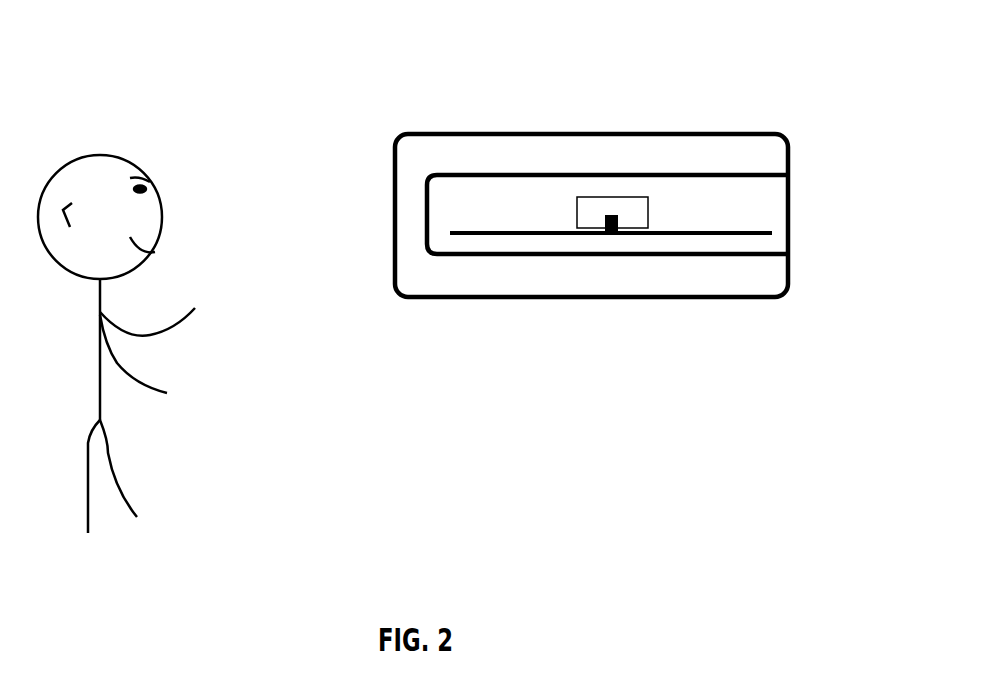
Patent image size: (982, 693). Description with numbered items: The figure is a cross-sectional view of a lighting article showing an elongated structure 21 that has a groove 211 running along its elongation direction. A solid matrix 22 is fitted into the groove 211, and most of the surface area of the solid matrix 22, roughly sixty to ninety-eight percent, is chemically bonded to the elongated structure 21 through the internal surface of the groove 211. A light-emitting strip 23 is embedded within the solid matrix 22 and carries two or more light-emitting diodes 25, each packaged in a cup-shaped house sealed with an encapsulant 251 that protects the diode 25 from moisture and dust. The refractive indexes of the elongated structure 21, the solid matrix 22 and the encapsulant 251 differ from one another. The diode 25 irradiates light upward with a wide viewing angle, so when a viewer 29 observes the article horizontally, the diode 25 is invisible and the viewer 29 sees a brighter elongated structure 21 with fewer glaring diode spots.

The elongated structure 21 is at (620, 148).
The solid matrix 22 is at (480, 203).
The groove 211 is at (707, 200).
The light-emitting strip 23 is at (723, 228).
The light-emitting diode 25 is at (613, 233).
The encapsulant 251 is at (590, 217).
The viewer 29 is at (95, 175).